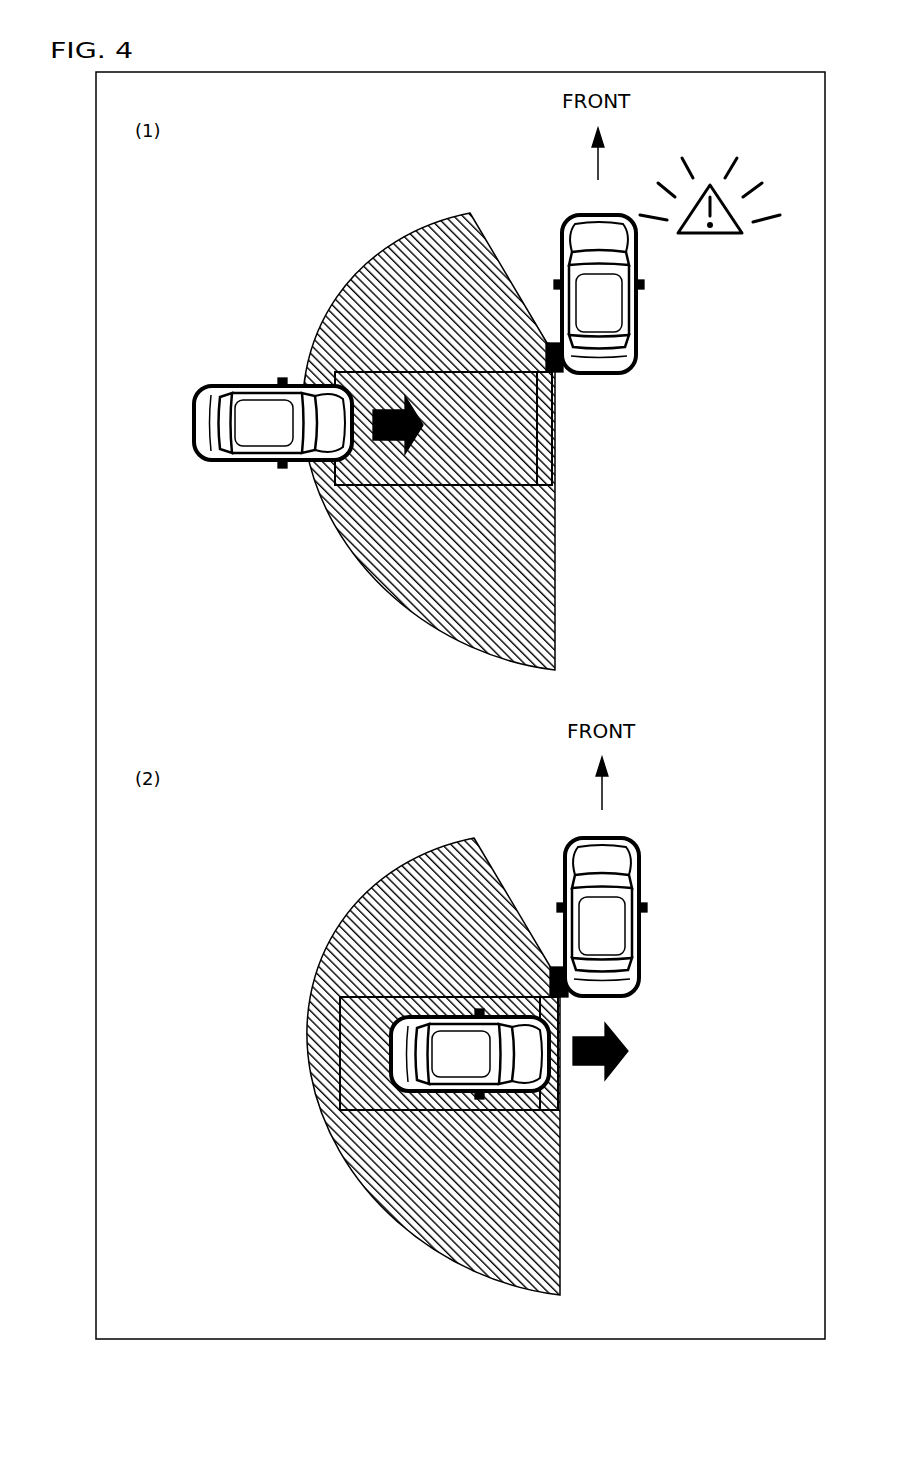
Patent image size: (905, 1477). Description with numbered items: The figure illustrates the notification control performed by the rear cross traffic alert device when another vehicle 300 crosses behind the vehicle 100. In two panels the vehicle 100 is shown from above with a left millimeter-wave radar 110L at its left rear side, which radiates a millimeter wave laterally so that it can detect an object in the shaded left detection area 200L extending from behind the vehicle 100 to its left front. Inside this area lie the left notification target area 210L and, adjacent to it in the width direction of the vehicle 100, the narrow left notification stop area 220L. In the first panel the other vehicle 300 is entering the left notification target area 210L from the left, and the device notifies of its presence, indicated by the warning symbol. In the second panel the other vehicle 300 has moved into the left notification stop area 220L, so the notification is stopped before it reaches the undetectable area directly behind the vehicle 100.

The vehicle 100 is at (638, 300).
The left side sensor 110L is at (548, 342).
The left detection area 200L is at (387, 272).
The left notification target area 210L is at (368, 381).
The left notification stop area 220L is at (545, 458).
The other vehicle 300 is at (245, 463).